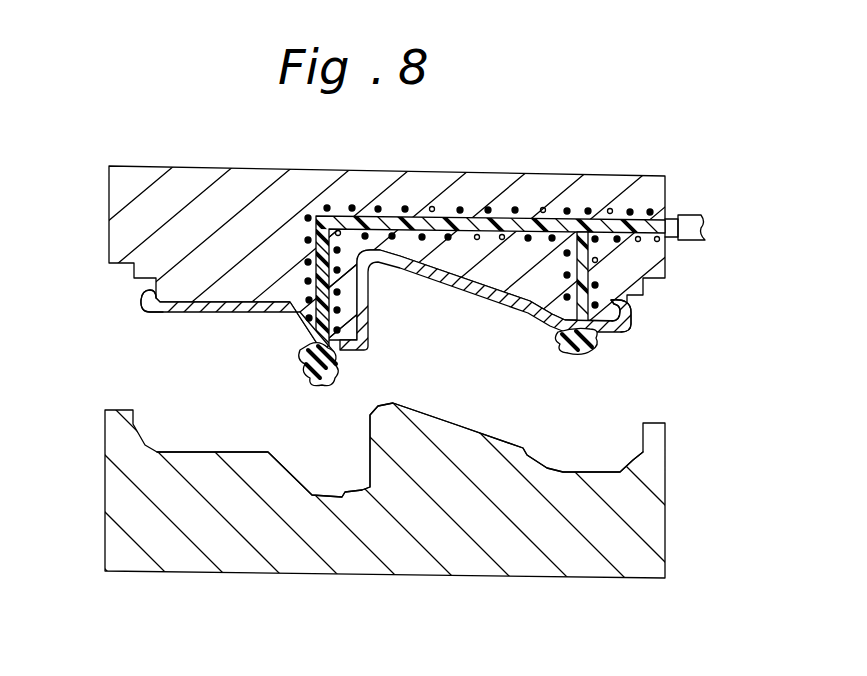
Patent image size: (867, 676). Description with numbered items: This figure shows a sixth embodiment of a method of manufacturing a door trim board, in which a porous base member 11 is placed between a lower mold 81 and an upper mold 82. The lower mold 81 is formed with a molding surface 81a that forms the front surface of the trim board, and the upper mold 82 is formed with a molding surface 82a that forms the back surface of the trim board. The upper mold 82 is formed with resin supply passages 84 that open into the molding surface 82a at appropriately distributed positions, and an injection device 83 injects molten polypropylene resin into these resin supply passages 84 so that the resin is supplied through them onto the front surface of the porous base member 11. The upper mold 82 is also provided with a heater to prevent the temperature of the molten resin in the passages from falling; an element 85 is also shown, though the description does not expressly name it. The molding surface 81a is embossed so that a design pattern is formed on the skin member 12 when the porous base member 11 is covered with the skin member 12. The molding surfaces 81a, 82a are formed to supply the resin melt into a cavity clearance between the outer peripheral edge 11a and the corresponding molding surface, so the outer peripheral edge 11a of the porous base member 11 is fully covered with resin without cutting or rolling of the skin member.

The upper mold 82 is at (126, 226).
The molding surface 82a is at (418, 272).
The resin supply passages 84 is at (437, 220).
The heater wires 85 is at (490, 208).
The injection device 83 is at (697, 241).
The porous base member 11 is at (193, 313).
The outer peripheral edge 11a is at (142, 288).
The skin member 12 is at (303, 377).
The lower mold 81 is at (115, 527).
The molding surface 81a is at (465, 427).